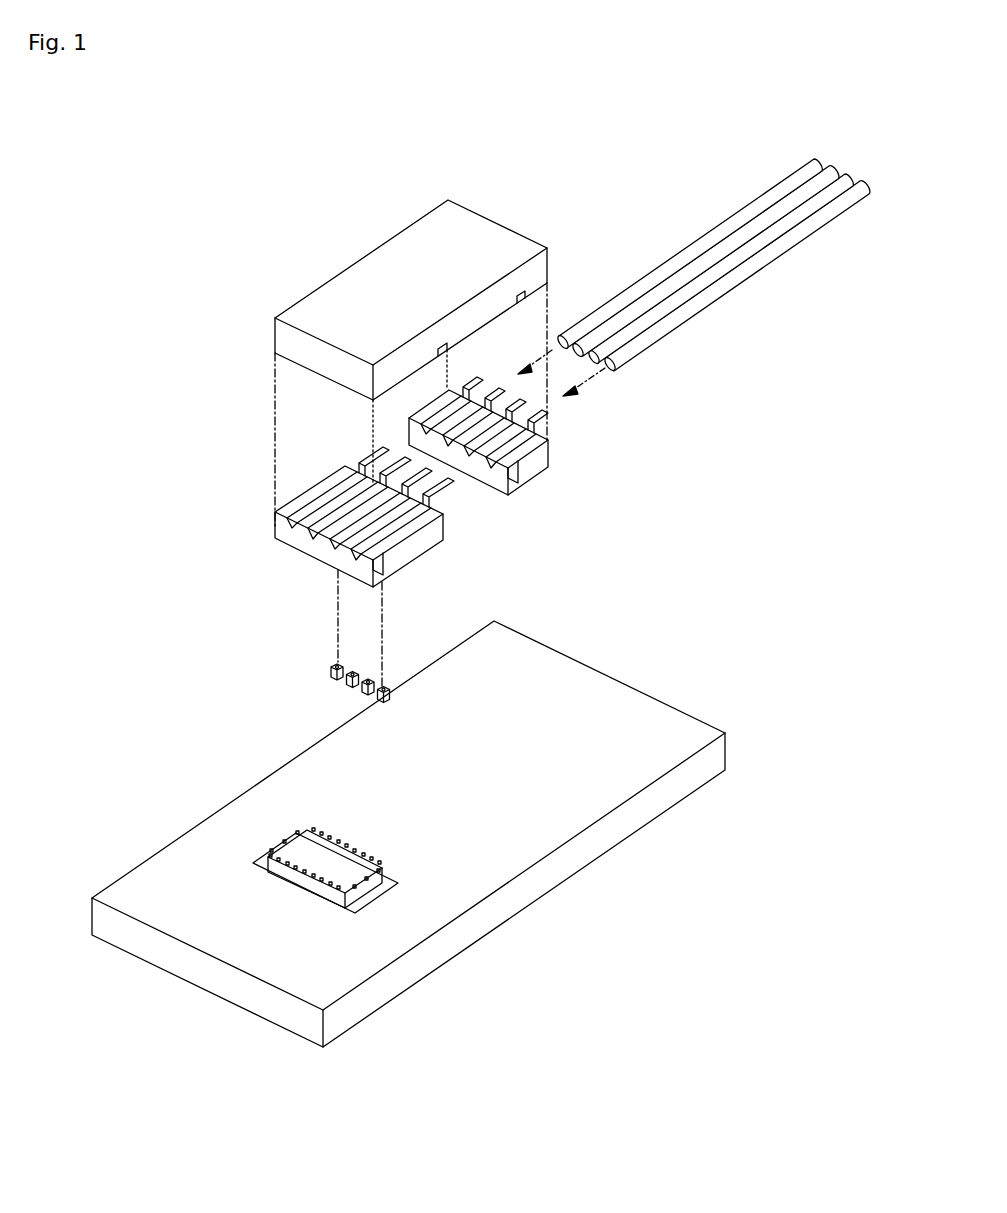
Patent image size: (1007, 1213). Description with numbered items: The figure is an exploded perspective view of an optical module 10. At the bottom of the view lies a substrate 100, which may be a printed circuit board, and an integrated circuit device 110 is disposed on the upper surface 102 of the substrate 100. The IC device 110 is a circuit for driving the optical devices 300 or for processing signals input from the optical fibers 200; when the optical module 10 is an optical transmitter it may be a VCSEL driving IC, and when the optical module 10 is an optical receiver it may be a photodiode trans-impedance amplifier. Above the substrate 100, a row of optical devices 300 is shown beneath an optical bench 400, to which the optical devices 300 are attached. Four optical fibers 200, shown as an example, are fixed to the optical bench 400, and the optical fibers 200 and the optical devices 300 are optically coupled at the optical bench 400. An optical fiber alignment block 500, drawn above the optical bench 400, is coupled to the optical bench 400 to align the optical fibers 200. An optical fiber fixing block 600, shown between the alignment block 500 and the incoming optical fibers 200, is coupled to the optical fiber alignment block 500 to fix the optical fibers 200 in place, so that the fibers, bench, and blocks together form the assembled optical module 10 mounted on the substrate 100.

The optical module 10 is at (245, 260).
The substrate 100 is at (193, 850).
The upper surface 102 is at (603, 752).
The integrated circuit (IC) device 110 is at (352, 872).
The optical fibers 200 is at (685, 258).
The optical devices 300 is at (328, 672).
The optical bench 400 is at (320, 497).
The optical fiber alignment block 500 is at (362, 287).
The optical fiber fixing block 600 is at (537, 458).